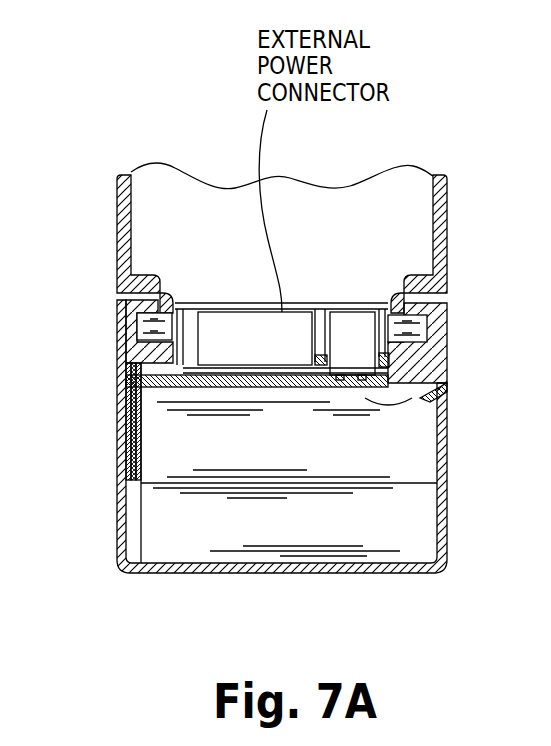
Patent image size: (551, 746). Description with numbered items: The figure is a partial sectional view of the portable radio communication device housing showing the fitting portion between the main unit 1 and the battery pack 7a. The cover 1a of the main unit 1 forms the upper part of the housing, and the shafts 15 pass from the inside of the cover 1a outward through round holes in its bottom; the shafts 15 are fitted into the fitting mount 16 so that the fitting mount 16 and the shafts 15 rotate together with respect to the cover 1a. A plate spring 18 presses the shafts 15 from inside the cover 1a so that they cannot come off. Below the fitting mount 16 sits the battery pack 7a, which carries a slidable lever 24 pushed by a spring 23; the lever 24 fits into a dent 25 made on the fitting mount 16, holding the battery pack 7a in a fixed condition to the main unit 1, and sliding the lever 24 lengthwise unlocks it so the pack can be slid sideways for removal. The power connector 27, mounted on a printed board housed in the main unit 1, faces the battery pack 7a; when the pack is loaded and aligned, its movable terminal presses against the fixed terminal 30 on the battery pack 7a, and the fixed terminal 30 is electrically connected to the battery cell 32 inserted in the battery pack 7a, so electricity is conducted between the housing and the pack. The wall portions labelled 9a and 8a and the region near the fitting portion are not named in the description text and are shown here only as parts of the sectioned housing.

The main unit 1 is at (110, 198).
The cover 1a is at (452, 202).
The upper housing side wall 9a is at (113, 268).
The battery pack 7a is at (448, 467).
The partition plate 8a is at (116, 341).
The shaft 15 is at (116, 313).
The fitting mount 16 is at (448, 307).
The plate spring 18 is at (208, 312).
The spring 23 is at (116, 460).
The lever 24 is at (116, 405).
The dent 25 is at (116, 367).
The power connector 27 is at (363, 312).
The fixed terminal 30 is at (412, 392).
The battery cell 32 is at (167, 537).